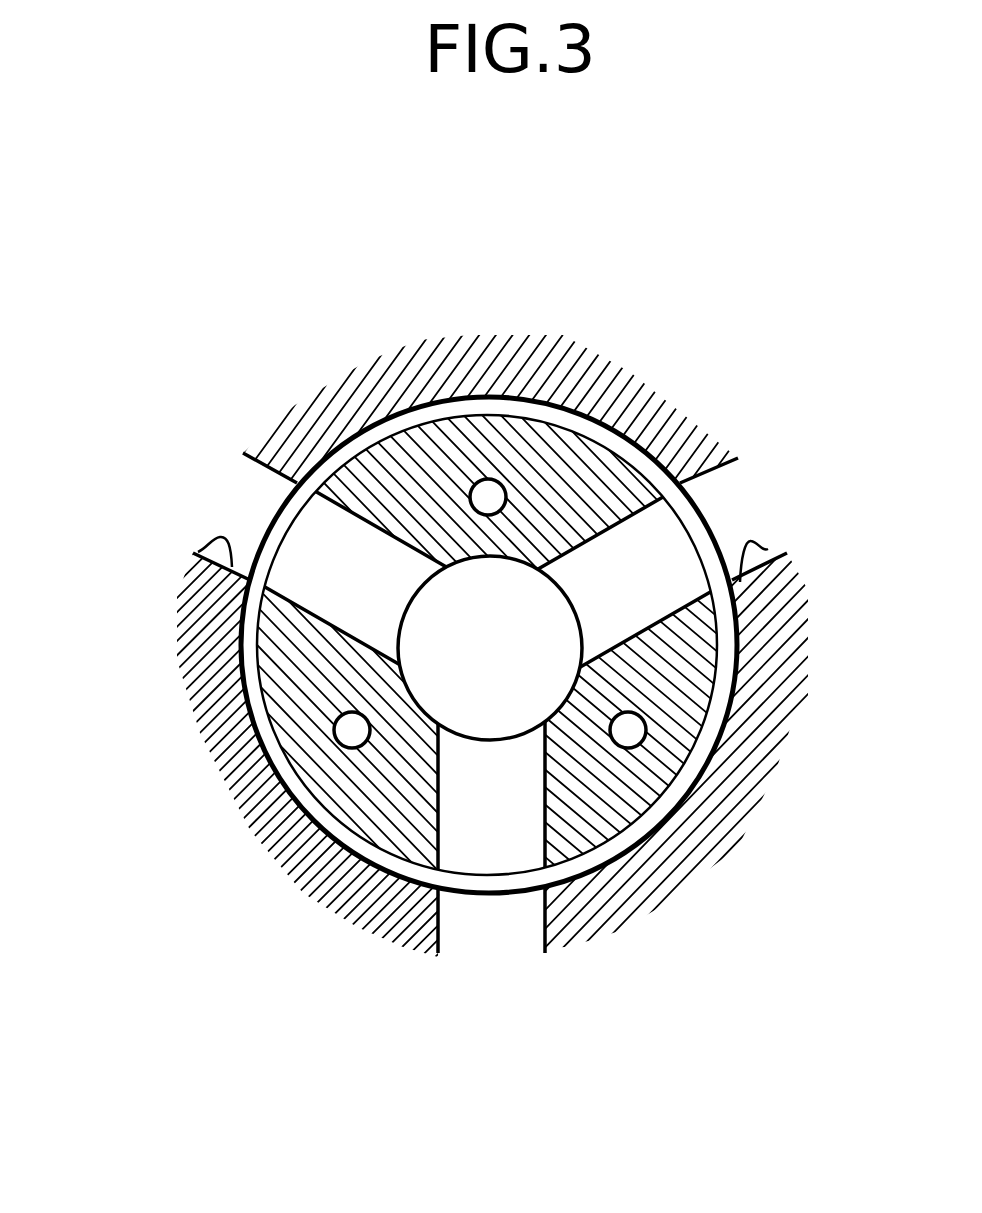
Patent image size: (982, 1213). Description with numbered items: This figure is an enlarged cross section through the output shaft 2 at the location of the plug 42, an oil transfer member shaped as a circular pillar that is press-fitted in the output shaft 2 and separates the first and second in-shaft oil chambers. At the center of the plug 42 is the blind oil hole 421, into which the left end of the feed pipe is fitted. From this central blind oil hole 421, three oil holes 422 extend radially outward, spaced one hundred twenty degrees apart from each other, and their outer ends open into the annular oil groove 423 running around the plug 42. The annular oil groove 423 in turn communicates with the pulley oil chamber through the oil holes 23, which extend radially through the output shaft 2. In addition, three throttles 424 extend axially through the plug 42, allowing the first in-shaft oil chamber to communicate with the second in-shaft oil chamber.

The output shaft 2 is at (491, 606).
The oil holes 23 is at (440, 923).
The plug 42 is at (491, 606).
The blind oil hole 421 is at (523, 566).
The oil holes 422 is at (460, 758).
The annular oil groove 423 is at (479, 609).
The throttles 424 is at (335, 733).